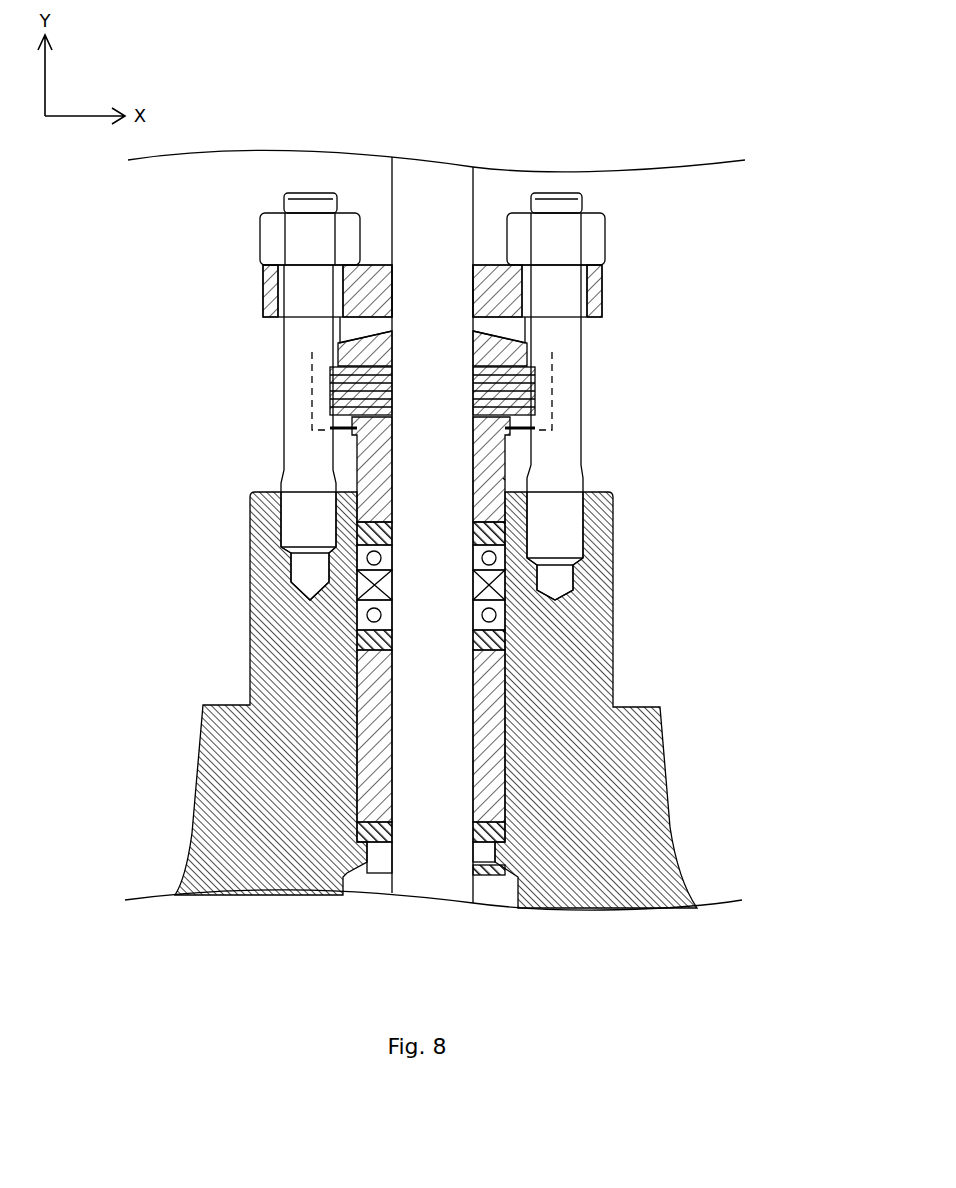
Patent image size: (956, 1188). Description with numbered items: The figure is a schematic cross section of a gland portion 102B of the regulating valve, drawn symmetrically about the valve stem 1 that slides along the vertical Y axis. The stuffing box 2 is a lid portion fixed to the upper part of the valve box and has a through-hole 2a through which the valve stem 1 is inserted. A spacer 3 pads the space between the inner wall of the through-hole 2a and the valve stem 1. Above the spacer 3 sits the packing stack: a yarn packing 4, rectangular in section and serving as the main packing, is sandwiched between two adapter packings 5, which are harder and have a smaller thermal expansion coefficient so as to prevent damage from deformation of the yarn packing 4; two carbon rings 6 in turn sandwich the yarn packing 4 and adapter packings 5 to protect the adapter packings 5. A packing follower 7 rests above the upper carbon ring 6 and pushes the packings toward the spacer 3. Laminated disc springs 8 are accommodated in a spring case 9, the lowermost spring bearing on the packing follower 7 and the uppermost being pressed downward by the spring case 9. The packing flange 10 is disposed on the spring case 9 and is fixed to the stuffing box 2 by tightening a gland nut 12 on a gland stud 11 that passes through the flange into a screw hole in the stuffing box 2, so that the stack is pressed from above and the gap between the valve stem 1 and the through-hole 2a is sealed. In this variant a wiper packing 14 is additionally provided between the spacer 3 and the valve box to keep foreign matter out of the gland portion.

The valve stem 1 is at (457, 756).
The stuffing box 2 is at (203, 740).
The through-hole 2a is at (503, 478).
The spacer 3 is at (360, 690).
The yarn packing 4 is at (357, 585).
The adapter packings 5 is at (357, 558).
The carbon rings 6 is at (357, 524).
The packing follower 7 is at (340, 460).
The disc springs 8 is at (330, 390).
The spring case 9 is at (338, 343).
The packing flange 10 is at (268, 287).
The gland stud 11 is at (285, 201).
The gland nut 12 is at (268, 240).
The wiper packing 14 is at (360, 831).
The gland portion 102B is at (756, 97).